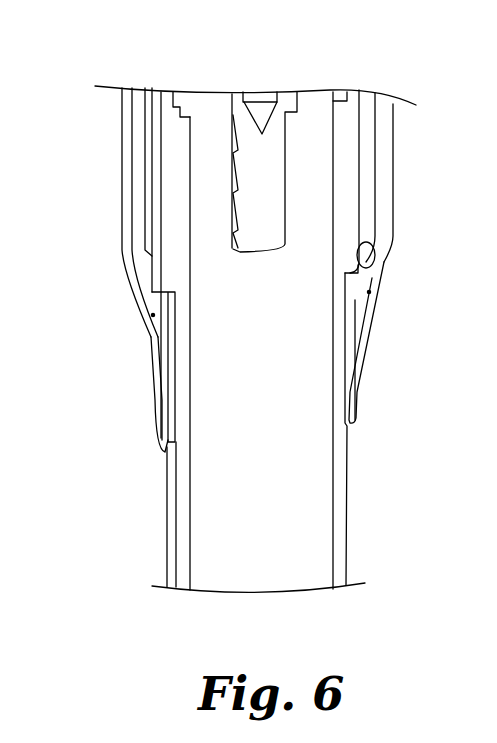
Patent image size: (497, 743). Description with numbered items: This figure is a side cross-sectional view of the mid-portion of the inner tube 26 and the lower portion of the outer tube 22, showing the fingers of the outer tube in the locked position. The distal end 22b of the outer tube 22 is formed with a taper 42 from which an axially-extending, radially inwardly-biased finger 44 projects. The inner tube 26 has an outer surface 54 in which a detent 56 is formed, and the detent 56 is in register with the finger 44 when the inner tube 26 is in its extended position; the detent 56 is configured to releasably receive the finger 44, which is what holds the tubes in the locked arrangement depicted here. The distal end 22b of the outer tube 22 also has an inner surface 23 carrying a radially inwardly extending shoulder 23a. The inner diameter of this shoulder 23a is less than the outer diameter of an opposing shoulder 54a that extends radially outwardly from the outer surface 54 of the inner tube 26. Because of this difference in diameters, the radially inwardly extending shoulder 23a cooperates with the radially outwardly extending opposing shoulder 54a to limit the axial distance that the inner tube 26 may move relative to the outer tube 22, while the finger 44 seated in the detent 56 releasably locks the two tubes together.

The outer tube 22 is at (393, 132).
The distal end of the outer tube 22b is at (125, 232).
The inner surface 23 is at (152, 122).
The radially inwardly extending shoulder 23a is at (365, 255).
The inner tube 26 is at (340, 108).
The taper 42 is at (358, 338).
The finger 44 is at (162, 397).
The outer surface 54 is at (348, 437).
The opposing shoulder 54a is at (358, 287).
The detent 56 is at (170, 330).